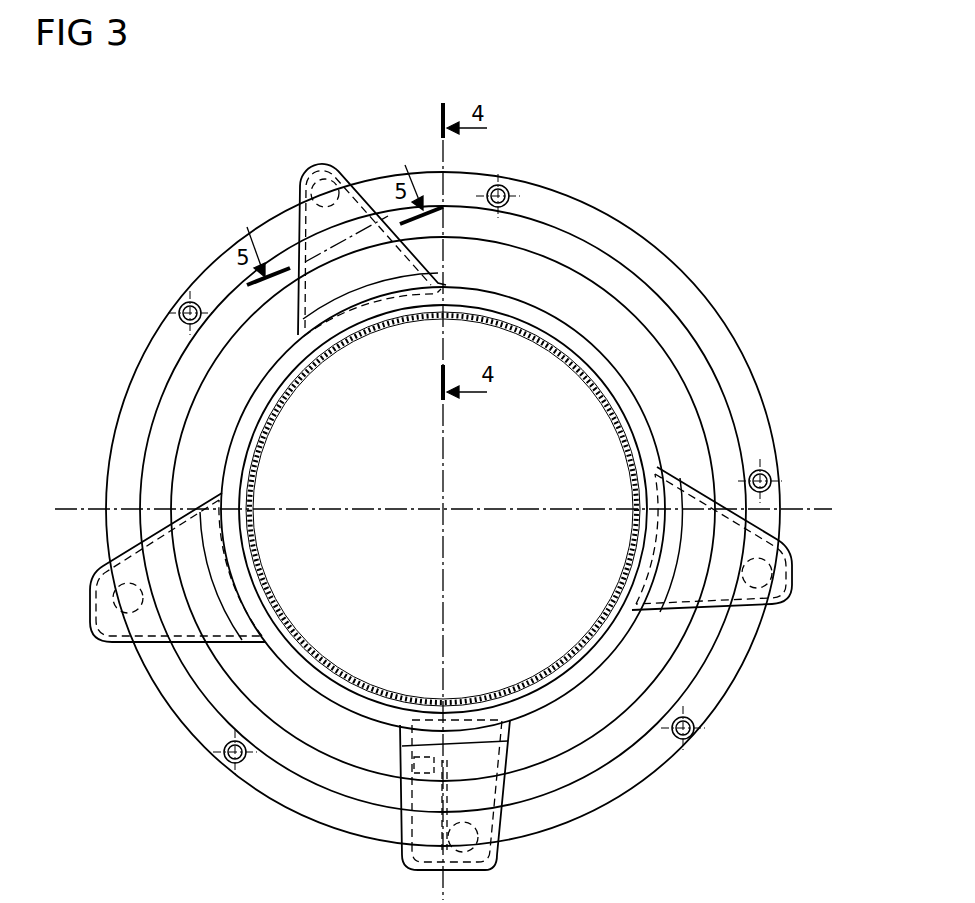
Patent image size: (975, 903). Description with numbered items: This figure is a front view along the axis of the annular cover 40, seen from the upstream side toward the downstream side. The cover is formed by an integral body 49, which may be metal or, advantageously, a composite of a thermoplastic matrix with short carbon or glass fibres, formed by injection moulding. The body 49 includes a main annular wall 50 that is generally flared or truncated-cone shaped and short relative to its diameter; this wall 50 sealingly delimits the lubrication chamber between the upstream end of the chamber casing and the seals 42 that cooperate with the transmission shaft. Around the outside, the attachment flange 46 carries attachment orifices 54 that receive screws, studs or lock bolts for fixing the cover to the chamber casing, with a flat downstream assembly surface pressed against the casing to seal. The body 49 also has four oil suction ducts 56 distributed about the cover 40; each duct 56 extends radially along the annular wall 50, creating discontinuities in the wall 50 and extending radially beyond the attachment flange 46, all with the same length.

The annular cover 40 is at (158, 201).
The seals 42 is at (575, 374).
The attachment flange 46 is at (697, 290).
The integral body 49 is at (681, 163).
The main annular wall 50 is at (160, 452).
The attachment orifices 54 is at (506, 186).
The oil suction duct 56 is at (333, 230).